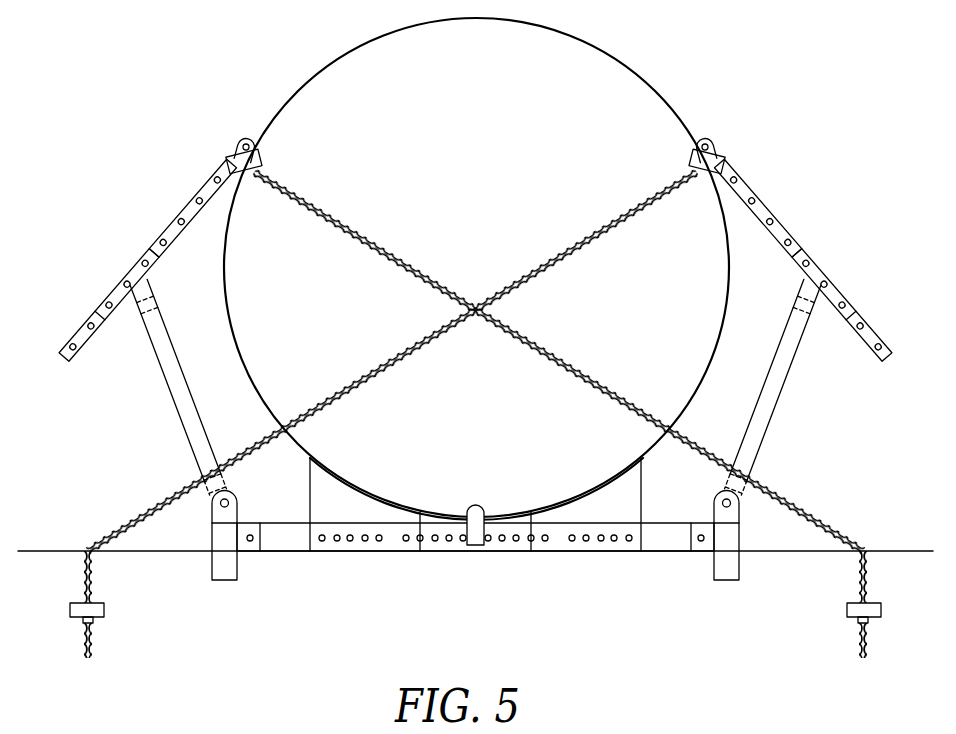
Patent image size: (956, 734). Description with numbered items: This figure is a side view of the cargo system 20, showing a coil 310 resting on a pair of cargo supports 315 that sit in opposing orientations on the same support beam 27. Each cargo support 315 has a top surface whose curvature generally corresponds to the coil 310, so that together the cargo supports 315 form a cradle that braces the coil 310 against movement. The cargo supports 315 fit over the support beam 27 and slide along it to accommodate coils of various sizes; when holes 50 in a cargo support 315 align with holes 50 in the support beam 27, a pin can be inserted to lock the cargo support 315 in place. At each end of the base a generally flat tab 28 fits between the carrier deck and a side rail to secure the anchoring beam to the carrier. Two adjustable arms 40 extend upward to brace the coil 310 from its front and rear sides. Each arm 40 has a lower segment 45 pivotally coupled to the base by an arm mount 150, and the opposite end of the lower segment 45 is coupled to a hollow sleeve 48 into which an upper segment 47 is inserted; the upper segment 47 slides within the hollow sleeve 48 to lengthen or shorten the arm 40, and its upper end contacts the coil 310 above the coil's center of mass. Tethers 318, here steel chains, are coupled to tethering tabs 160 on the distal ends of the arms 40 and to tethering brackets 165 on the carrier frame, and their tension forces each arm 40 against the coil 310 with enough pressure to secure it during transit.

The cargo system 20 is at (83, 86).
The support beam 27 is at (281, 552).
The tab 28 is at (218, 568).
The adjustable arm 40 is at (476, 251).
The lower segment 45 is at (171, 395).
The upper segment 47 is at (203, 185).
The hollow sleeve 48 is at (120, 287).
The holes 50 is at (127, 284).
The arm mount 150 is at (212, 518).
The tethering tab 160 is at (252, 168).
The tethering bracket 165 is at (82, 603).
The coil 310 is at (613, 57).
The cargo support 315 is at (303, 487).
The tether 318 is at (158, 506).